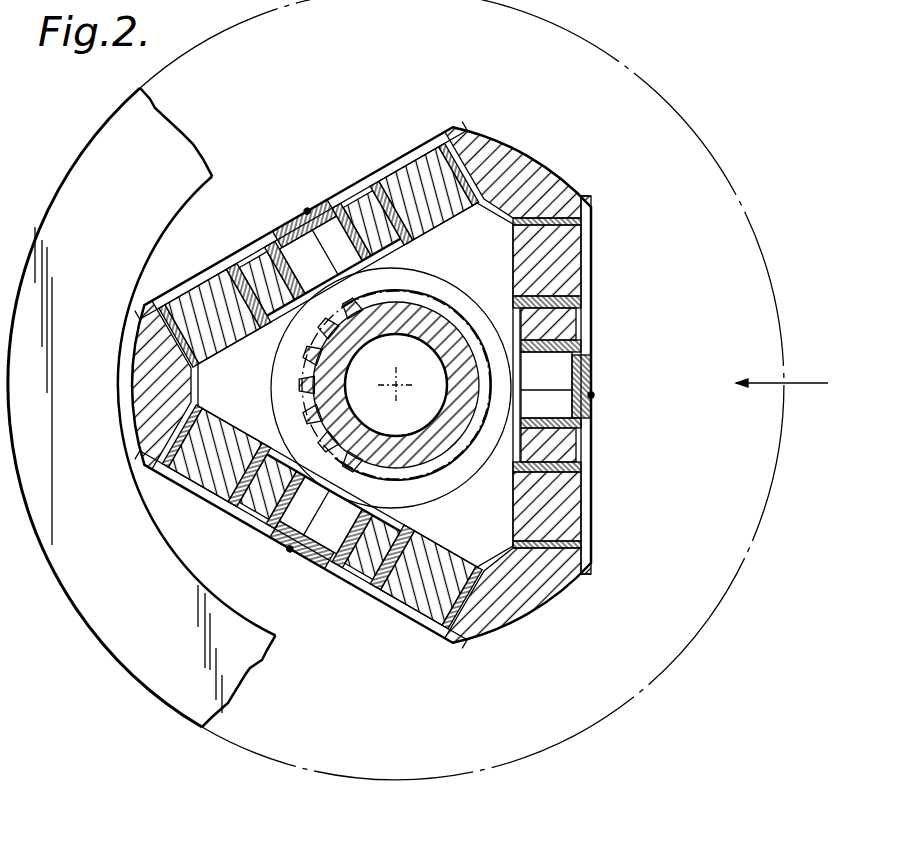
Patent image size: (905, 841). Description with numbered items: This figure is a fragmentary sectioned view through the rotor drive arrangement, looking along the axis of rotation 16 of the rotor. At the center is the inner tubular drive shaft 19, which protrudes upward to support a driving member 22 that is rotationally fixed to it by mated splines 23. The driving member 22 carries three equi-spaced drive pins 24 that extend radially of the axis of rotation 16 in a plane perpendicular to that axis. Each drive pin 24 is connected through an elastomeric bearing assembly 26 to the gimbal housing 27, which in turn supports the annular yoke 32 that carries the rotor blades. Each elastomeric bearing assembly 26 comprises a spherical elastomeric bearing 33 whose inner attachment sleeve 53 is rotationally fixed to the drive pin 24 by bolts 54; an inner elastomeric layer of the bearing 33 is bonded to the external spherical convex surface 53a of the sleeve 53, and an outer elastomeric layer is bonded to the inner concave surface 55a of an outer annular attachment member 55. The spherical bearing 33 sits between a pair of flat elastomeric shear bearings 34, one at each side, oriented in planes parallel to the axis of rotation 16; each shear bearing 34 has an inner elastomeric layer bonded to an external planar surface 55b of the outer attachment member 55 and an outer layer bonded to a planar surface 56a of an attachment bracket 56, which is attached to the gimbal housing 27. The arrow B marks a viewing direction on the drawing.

The axis of rotation 16 is at (394, 385).
The inner tubular drive shaft 19 is at (414, 302).
The driving member 22 is at (456, 480).
The mated splines 23 is at (368, 303).
The drive pin 24 is at (546, 385).
The elastomeric bearing assembly 26 is at (438, 418).
The gimbal housing 27 is at (527, 162).
The annular yoke 32 is at (57, 209).
The spherical elastomeric bearing 33 is at (581, 386).
The flat elastomeric shear bearing 34 is at (547, 383).
The inner attachment sleeve 53 is at (548, 445).
The external spherical convex surface 53a is at (547, 467).
The bolt 54 is at (591, 395).
The outer annular attachment member 55 is at (550, 385).
The inner concave surface 55a is at (548, 324).
The external planar surface 55b is at (547, 302).
The attachment bracket 56 is at (586, 385).
The planar surface 56a is at (547, 383).
The view direction arrow B is at (794, 383).